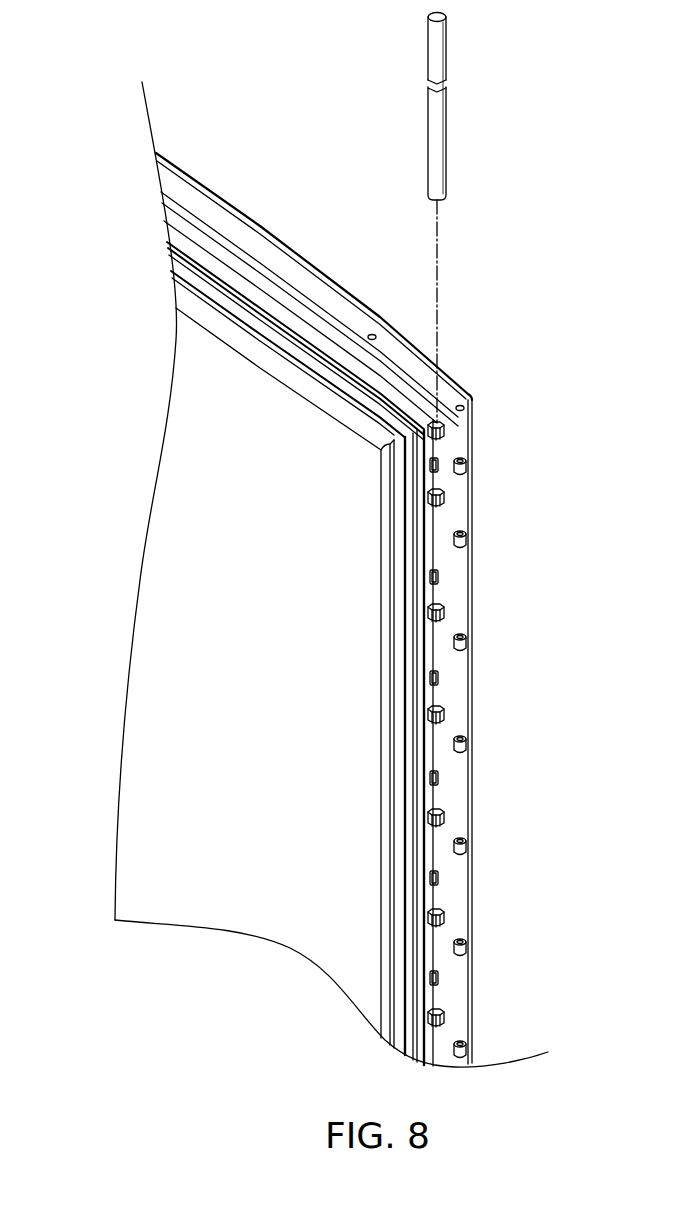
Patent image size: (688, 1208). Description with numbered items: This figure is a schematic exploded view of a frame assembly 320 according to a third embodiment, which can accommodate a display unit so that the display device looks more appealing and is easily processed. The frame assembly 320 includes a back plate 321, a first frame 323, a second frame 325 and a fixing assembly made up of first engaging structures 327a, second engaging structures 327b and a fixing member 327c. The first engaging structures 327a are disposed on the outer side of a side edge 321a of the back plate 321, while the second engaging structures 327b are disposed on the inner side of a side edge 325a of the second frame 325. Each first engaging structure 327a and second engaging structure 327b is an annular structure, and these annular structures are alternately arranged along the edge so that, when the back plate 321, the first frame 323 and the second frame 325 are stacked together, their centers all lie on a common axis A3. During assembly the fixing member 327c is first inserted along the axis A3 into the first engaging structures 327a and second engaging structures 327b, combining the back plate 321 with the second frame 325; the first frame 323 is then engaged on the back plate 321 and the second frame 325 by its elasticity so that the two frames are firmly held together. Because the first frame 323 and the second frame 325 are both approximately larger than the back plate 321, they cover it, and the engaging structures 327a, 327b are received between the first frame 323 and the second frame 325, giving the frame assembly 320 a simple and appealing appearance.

The frame assembly 320 is at (80, 52).
The back plate 321 is at (421, 752).
The side edge of the back plate 321a is at (434, 958).
The first frame 323 is at (388, 998).
The second frame 325 is at (456, 580).
The side edge of the second frame 325a is at (472, 699).
The first engaging structure 327a is at (444, 818).
The second engaging structure 327b is at (467, 646).
The fixing member 327c is at (461, 128).
The axis A3 is at (437, 262).